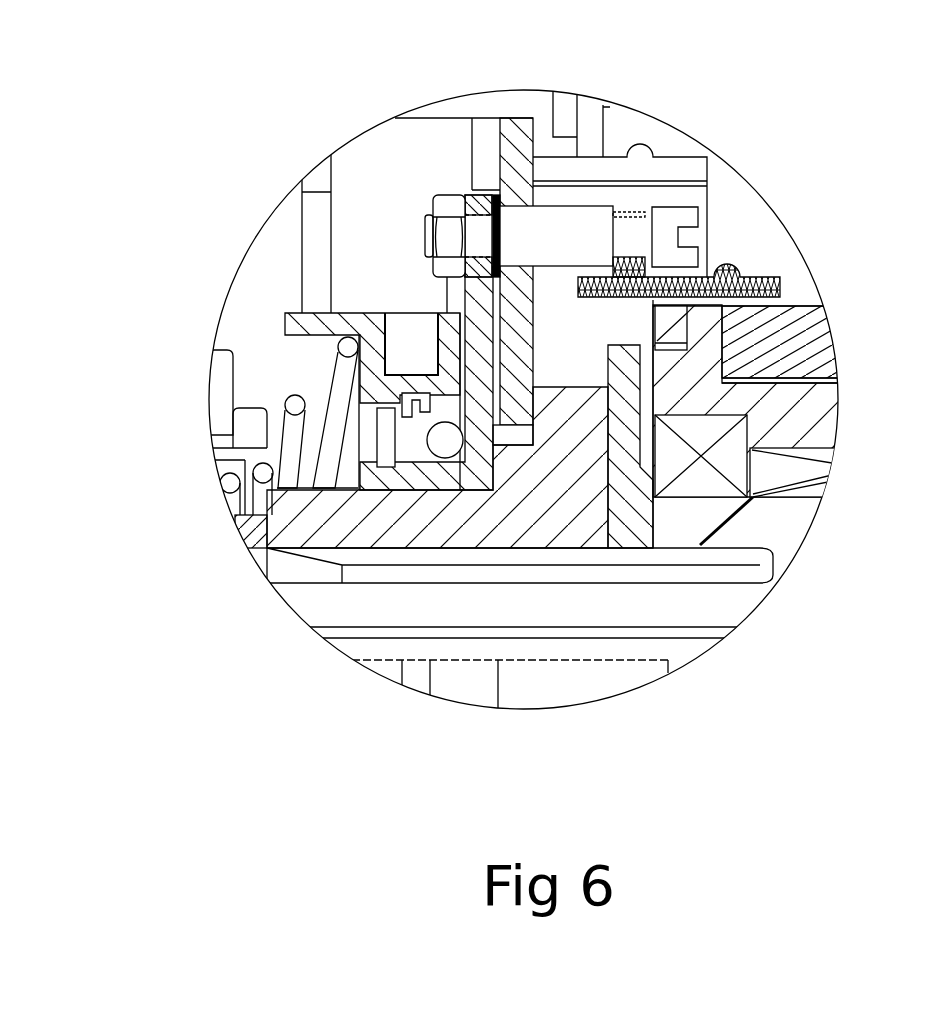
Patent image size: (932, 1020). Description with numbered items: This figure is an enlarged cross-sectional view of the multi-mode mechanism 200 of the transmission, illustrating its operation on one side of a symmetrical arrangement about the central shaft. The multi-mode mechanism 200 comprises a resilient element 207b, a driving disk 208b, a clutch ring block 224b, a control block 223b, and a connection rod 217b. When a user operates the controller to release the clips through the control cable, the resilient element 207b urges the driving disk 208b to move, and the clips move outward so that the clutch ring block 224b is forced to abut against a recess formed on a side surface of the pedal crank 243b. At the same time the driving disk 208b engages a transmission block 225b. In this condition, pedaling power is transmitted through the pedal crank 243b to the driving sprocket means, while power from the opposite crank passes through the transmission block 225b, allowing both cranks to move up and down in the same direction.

The multi-mode mechanism 200 is at (289, 90).
The resilient element 207b is at (332, 405).
The driving disk 208b is at (447, 310).
The connection rod 217b is at (573, 233).
The control block 223b is at (633, 532).
The clutch ring block 224b is at (780, 276).
The transmission block 225b is at (450, 523).
The pedal crank 243b is at (818, 392).